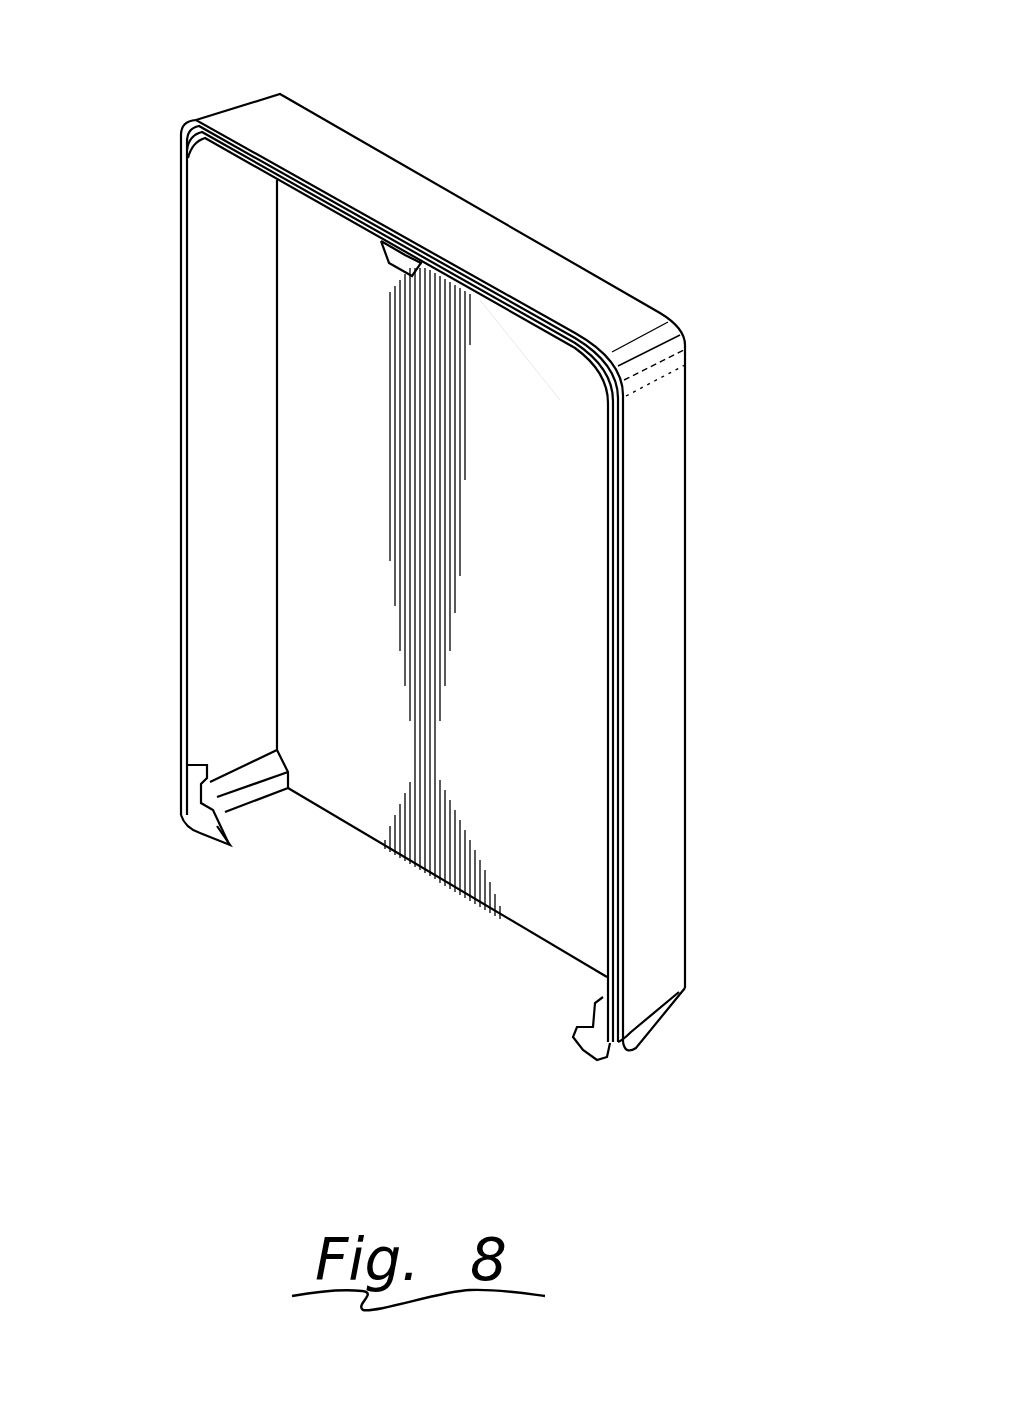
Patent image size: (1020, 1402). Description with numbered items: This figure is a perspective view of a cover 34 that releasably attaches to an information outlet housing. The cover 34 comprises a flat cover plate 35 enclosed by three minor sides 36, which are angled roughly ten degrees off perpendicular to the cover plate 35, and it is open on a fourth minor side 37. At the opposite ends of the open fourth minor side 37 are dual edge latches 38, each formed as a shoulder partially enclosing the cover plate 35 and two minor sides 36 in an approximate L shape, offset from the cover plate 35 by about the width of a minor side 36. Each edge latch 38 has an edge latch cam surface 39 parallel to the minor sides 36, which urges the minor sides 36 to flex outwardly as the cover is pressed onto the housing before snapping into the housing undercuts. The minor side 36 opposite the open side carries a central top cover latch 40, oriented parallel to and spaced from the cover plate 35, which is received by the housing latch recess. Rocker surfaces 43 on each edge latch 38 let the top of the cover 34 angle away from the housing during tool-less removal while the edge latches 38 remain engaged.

The cover 34 is at (680, 293).
The cover plate 35 is at (548, 362).
The minor sides 36 is at (302, 137).
The fourth minor side 37 is at (487, 900).
The edge latches 38 is at (194, 752).
The edge latch cam surface 39 is at (205, 809).
The top cover latch 40 is at (395, 272).
The rocker surfaces 43 is at (192, 822).